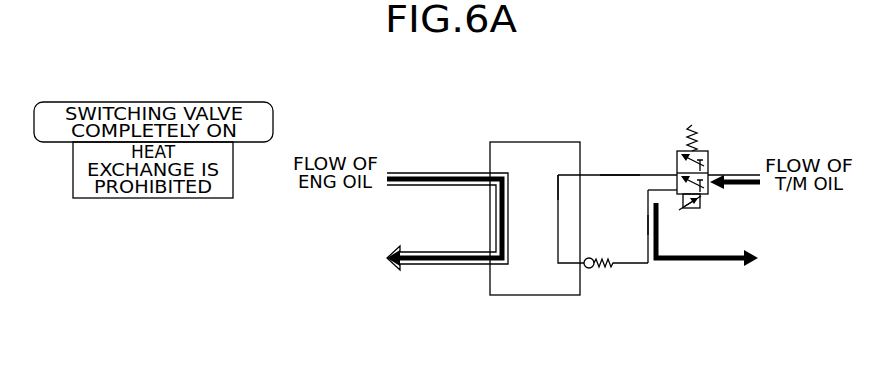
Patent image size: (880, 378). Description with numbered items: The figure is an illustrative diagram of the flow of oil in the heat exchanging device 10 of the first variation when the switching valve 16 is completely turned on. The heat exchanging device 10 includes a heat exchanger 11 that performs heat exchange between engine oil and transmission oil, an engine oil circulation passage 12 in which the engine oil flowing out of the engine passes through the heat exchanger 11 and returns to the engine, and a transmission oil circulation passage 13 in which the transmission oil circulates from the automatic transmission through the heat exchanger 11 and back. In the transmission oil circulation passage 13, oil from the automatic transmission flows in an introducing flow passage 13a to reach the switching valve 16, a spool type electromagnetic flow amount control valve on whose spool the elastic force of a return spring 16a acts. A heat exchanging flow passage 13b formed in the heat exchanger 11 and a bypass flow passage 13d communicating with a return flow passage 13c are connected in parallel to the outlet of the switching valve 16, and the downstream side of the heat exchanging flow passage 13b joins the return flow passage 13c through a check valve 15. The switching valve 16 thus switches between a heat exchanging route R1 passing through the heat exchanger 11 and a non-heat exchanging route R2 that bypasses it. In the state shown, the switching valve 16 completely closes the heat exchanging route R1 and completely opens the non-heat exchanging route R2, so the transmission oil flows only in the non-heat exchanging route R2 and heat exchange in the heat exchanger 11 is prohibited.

The heat exchanging device 10 is at (587, 118).
The heat exchanger 11 is at (536, 142).
The engine oil circulation passage 12 is at (437, 283).
The transmission oil circulation passage 13 is at (641, 297).
The introducing flow passage 13a is at (740, 173).
The heat exchanging flow passage 13b is at (557, 176).
The return flow passage 13c is at (715, 263).
The bypass flow passage 13d is at (647, 203).
The check valve 15 is at (597, 283).
The switching valve 16 is at (718, 196).
The return spring 16a is at (692, 125).
The heat exchanging route R1 is at (640, 173).
The non-heat exchanging route R2 is at (648, 222).